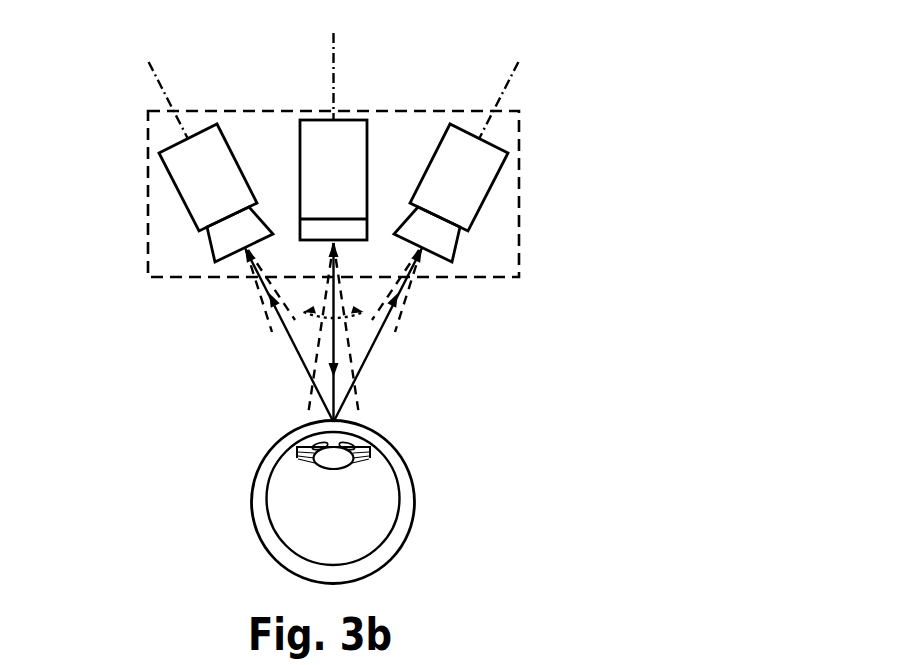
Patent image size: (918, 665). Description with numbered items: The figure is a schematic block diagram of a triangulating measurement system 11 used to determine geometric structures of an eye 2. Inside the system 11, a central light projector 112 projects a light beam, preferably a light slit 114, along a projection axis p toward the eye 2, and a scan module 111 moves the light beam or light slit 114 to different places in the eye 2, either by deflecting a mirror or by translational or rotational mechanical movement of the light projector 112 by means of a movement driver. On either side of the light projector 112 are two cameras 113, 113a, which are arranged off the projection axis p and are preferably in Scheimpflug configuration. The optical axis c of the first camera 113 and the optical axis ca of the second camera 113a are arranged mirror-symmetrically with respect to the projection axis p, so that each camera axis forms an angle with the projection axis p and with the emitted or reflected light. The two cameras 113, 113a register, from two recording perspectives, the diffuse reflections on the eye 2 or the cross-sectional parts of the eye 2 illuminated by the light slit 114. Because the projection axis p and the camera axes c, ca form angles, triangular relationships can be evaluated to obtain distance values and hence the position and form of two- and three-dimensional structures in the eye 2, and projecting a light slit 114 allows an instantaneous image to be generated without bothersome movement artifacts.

The eye 2 is at (240, 553).
The triangulating measurement system 11 is at (168, 243).
The scan module 111 is at (317, 225).
The light projector 112 is at (353, 155).
The camera 113 is at (190, 185).
The camera 113a is at (482, 187).
The light slit 114 is at (332, 343).
The projection axis p is at (336, 82).
The optical axis c is at (158, 79).
The optical axis ca is at (517, 77).